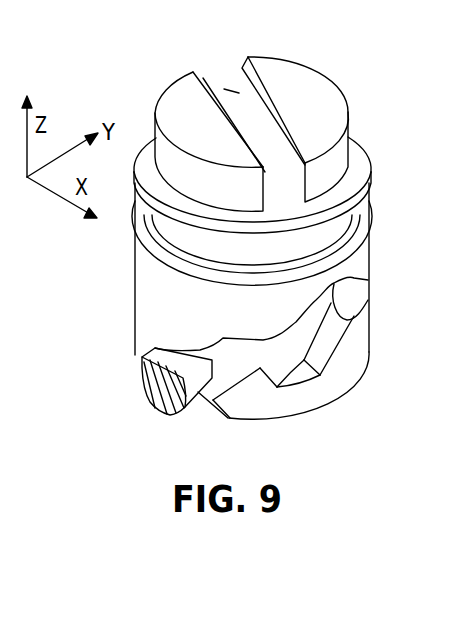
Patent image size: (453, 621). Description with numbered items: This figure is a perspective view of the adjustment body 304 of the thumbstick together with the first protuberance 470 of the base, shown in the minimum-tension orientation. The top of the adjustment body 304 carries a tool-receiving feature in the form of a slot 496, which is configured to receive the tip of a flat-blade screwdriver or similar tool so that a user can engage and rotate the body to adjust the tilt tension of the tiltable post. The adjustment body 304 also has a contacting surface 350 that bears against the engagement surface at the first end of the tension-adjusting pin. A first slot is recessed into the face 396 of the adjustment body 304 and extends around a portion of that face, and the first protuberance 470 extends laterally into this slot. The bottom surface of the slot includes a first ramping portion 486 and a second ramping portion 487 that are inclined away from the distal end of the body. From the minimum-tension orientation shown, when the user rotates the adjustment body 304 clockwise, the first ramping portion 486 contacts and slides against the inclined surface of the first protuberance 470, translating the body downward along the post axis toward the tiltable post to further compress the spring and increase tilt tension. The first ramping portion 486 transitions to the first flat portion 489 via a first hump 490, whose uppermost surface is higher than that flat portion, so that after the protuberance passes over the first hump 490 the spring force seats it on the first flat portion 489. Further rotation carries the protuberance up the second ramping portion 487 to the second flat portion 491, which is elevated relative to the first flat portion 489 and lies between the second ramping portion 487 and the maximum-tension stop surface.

The adjustment body 304 is at (141, 83).
The slot 496 is at (207, 84).
The contacting surface 350 is at (272, 116).
The face 396 is at (135, 287).
The first protuberance 470 is at (143, 392).
The first hump 490 is at (263, 375).
The first ramping portion 486 is at (248, 388).
The second ramping portion 487 is at (333, 342).
The first flat portion 489 is at (300, 373).
The second flat portion 491 is at (355, 293).